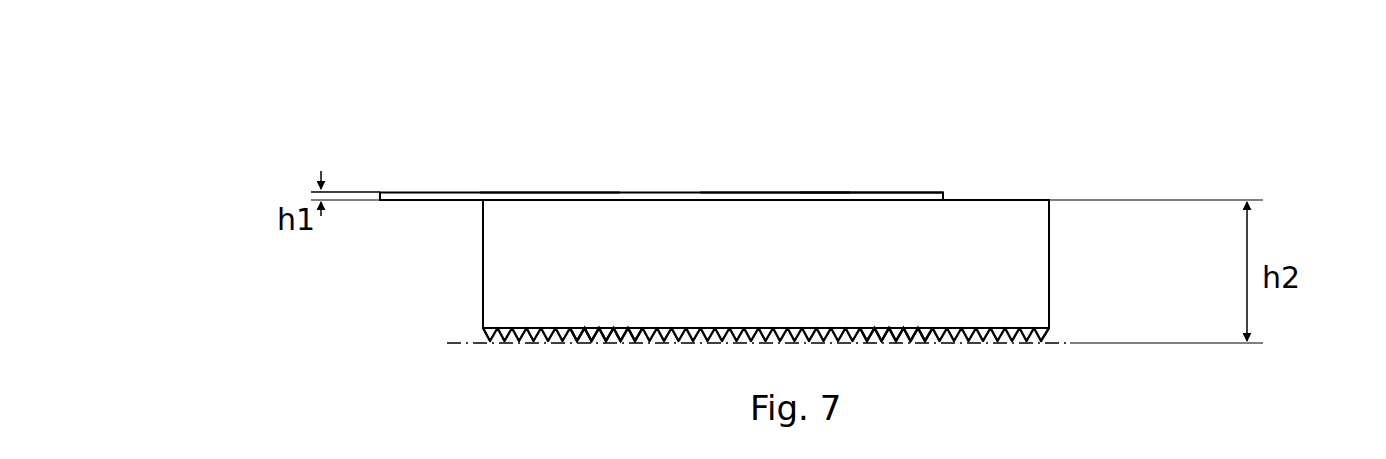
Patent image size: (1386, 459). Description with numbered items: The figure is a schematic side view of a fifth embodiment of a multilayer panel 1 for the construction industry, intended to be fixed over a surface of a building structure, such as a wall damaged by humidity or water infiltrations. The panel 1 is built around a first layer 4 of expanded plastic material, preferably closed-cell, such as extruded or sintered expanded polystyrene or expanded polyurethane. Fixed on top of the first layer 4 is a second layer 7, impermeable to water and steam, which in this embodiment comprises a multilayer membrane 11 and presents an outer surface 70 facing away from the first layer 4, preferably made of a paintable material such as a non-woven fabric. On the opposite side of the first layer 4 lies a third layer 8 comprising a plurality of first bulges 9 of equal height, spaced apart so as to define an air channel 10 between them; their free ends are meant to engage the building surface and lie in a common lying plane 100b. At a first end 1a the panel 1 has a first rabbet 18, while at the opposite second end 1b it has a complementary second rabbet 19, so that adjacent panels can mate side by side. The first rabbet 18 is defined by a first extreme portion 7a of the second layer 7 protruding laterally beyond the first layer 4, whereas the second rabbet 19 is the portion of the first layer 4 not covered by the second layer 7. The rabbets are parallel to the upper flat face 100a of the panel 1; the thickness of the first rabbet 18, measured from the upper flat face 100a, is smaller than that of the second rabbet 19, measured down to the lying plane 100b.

The multilayer panel 1 is at (804, 133).
The first end 1a is at (370, 206).
The second end 1b is at (1053, 248).
The first layer 4 is at (1028, 282).
The second layer 7 is at (645, 189).
The first extreme portion 7a is at (405, 188).
The third layer 8 is at (1051, 338).
The first bulges 9 is at (627, 344).
The air channel 10 is at (879, 346).
The multilayer membrane 11 is at (772, 187).
The first rabbet 18 is at (463, 206).
The second rabbet 19 is at (1011, 197).
The outer surface 70 is at (548, 188).
The upper flat face 100a is at (872, 188).
The lying plane 100b is at (446, 346).